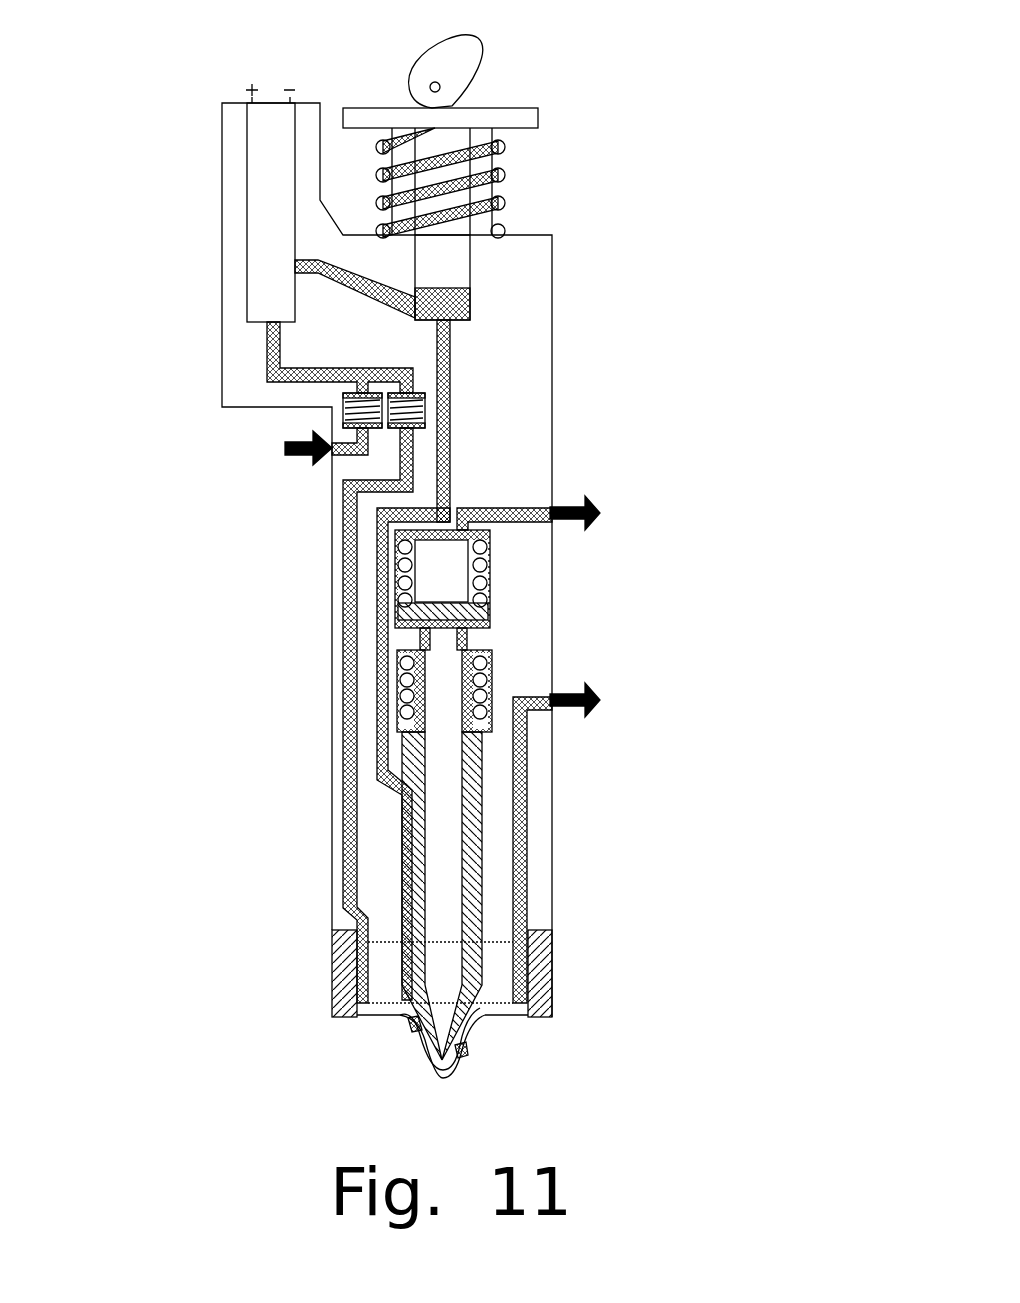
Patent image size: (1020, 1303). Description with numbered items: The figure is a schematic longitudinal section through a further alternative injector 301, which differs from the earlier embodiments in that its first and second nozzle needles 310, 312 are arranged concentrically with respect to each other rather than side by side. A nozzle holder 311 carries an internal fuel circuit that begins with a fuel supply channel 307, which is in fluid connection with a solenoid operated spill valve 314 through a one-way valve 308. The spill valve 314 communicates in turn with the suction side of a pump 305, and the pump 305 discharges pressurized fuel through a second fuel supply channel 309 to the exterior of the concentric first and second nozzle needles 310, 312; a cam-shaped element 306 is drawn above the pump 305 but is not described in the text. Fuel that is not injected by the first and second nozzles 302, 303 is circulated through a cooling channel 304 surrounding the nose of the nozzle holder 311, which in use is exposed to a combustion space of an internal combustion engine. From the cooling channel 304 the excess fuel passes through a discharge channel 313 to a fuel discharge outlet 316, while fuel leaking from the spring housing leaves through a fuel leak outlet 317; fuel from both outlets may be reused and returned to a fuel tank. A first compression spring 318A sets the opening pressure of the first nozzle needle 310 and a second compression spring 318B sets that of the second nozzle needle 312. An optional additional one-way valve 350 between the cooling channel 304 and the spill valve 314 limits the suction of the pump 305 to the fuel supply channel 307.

The injector 301 is at (188, 795).
The first nozzle 302 is at (470, 1055).
The second nozzle 303 is at (410, 1023).
The cooling channel 304 is at (348, 1010).
The pump 305 is at (447, 272).
The cam 306 is at (460, 62).
The fuel supply channel 307 is at (333, 455).
The one-way valve 308 is at (343, 410).
The fuel supply channel 309 is at (447, 450).
The first nozzle needle 310 is at (440, 975).
The nozzle holder 311 is at (493, 1010).
The second nozzle needle 312 is at (475, 898).
The discharge channel 313 is at (527, 850).
The spill valve 314 is at (265, 200).
The fuel discharge outlet 316 is at (545, 700).
The fuel leak outlet 317 is at (552, 525).
The first compression spring 318A is at (403, 567).
The second compression spring 318B is at (403, 680).
The additional one-way valve 350 is at (408, 418).